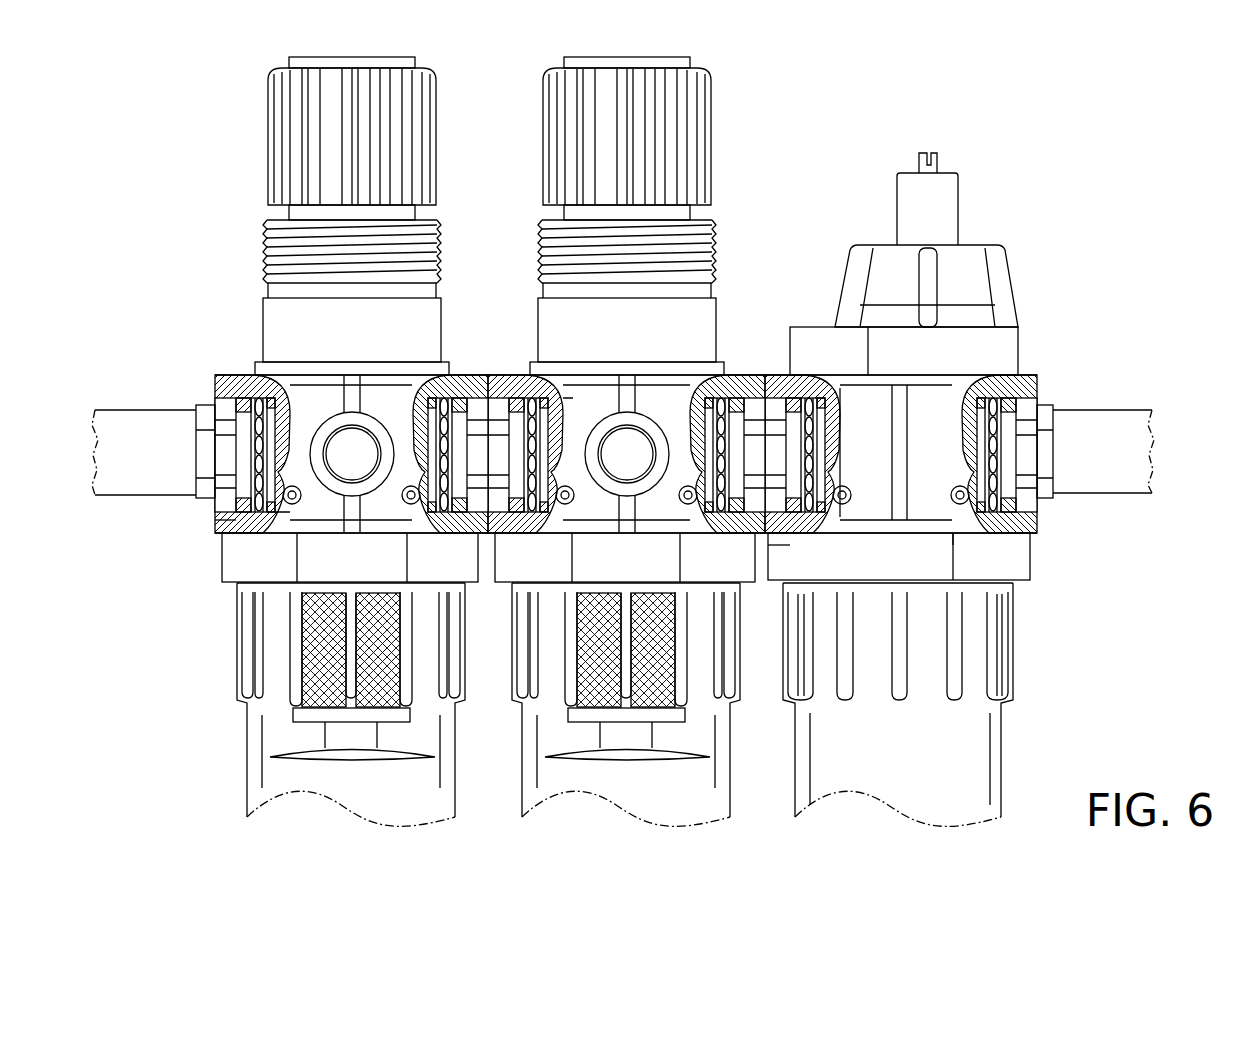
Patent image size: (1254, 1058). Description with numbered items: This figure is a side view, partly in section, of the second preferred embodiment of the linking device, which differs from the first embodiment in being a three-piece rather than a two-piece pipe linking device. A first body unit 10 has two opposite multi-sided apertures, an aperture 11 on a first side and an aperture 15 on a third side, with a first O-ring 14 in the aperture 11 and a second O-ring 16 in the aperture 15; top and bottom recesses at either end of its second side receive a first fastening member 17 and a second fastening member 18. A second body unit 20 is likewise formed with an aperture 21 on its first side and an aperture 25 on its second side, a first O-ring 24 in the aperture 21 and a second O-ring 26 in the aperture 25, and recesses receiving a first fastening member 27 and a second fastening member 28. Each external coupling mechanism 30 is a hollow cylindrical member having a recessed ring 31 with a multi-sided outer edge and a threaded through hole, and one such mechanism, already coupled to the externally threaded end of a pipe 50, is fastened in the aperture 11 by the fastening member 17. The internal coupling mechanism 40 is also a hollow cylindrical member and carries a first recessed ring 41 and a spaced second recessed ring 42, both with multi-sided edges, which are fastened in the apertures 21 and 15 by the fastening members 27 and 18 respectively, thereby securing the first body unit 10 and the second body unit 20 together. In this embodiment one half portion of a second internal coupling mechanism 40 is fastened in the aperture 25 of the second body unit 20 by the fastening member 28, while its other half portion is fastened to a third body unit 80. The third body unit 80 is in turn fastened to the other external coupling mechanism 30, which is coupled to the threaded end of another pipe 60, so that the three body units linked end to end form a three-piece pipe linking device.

The first body unit 10 is at (1043, 334).
The aperture 11 is at (1037, 530).
The first O-ring 14 is at (987, 527).
The aperture 15 is at (770, 527).
The second O-ring 16 is at (813, 375).
The first fastening member 17 is at (1008, 375).
The second fastening member 18 is at (778, 375).
The second body unit 20 is at (749, 212).
The aperture 21 is at (478, 533).
The first O-ring 24 is at (435, 380).
The aperture 25 is at (217, 525).
The second O-ring 26 is at (546, 378).
The first fastening member 27 is at (458, 375).
The second fastening member 28 is at (246, 375).
The external coupling mechanism 30 is at (216, 392).
The recessed ring 31 is at (247, 457).
The internal coupling mechanism 40 is at (602, 418).
The first recessed ring 41 is at (458, 455).
The second recessed ring 42 is at (520, 457).
The pipe 50 is at (1053, 405).
The pipe 60 is at (197, 412).
The third body unit 80 is at (206, 326).